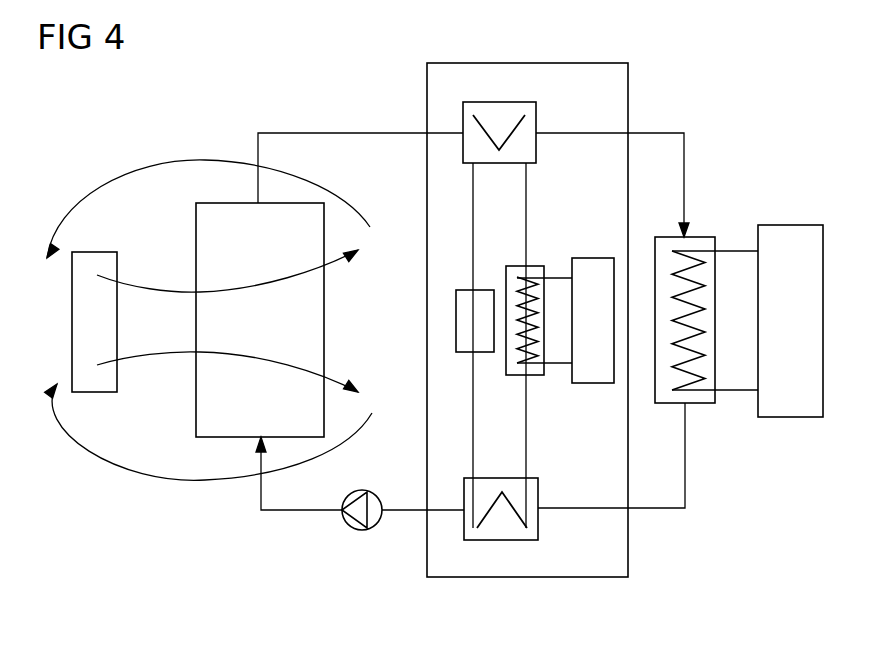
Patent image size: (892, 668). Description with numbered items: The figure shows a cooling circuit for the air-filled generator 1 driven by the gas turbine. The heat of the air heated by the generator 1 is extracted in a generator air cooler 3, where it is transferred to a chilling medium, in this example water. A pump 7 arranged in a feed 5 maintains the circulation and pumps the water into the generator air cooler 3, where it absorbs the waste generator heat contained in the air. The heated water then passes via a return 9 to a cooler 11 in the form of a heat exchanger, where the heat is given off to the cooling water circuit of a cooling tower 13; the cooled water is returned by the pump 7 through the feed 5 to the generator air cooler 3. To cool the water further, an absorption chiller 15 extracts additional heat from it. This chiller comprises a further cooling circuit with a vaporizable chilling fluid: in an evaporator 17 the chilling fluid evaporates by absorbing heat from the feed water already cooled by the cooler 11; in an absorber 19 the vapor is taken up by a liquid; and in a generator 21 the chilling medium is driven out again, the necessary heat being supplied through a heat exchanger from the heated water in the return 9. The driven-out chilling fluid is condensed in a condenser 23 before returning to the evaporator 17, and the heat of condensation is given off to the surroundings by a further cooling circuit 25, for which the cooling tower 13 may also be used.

The generator 1 is at (95, 393).
The generator air cooler 3 is at (324, 320).
The feed 5 is at (300, 512).
The pump 7 is at (362, 531).
The return 9 is at (350, 132).
The cooler 11 is at (700, 237).
The cooling tower 13 is at (790, 225).
The absorption chiller 15 is at (532, 578).
The evaporator 17 is at (538, 520).
The absorber 19 is at (456, 320).
The generator 21 is at (536, 145).
The condenser 23 is at (535, 266).
The further cooling circuit 25 is at (592, 384).